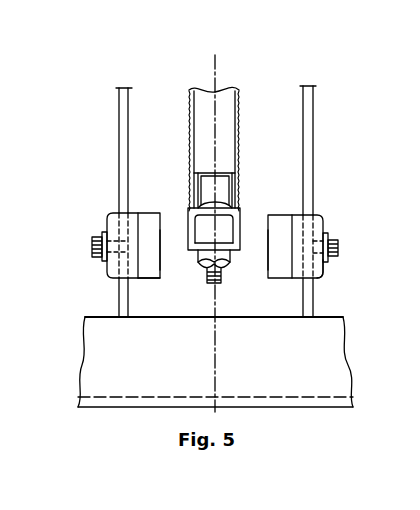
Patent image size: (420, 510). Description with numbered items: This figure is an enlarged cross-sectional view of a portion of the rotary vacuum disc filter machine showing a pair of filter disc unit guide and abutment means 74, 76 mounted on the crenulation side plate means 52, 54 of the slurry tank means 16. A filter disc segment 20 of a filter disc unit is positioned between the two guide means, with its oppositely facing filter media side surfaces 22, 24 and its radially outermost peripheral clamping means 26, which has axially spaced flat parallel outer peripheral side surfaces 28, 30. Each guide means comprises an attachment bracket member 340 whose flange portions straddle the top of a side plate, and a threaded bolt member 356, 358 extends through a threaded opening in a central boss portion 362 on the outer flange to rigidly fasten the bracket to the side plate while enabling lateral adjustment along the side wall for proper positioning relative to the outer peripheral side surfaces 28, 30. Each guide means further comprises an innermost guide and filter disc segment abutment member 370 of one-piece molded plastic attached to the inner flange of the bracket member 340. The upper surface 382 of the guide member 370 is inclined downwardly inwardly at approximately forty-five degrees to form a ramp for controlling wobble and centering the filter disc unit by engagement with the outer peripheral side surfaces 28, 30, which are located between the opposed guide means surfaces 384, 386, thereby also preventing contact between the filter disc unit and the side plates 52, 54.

The slurry tank means 16 is at (322, 313).
The filter disc segment 20 is at (219, 120).
The filter media side surface 22 is at (190, 99).
The filter media side surface 24 is at (238, 102).
The peripheral clamping means 26 is at (244, 199).
The outer peripheral side surface 28 is at (188, 212).
The outer peripheral side surface 30 is at (242, 212).
The side plate means 52 is at (118, 121).
The side plate means 54 is at (313, 100).
The filter disc unit guide and abutment means 74 is at (121, 243).
The filter disc unit guide and abutment means 76 is at (313, 242).
The attachment bracket member 340 is at (68, 259).
The threaded bolt member 356 is at (92, 246).
The threaded bolt member 358 is at (340, 248).
The central boss portion 362 is at (326, 264).
The innermost guide and filter disc segment abutment member 370 is at (158, 280).
The upper surface 382 is at (150, 222).
The guide means surface 384 is at (162, 248).
The guide means surface 386 is at (268, 249).